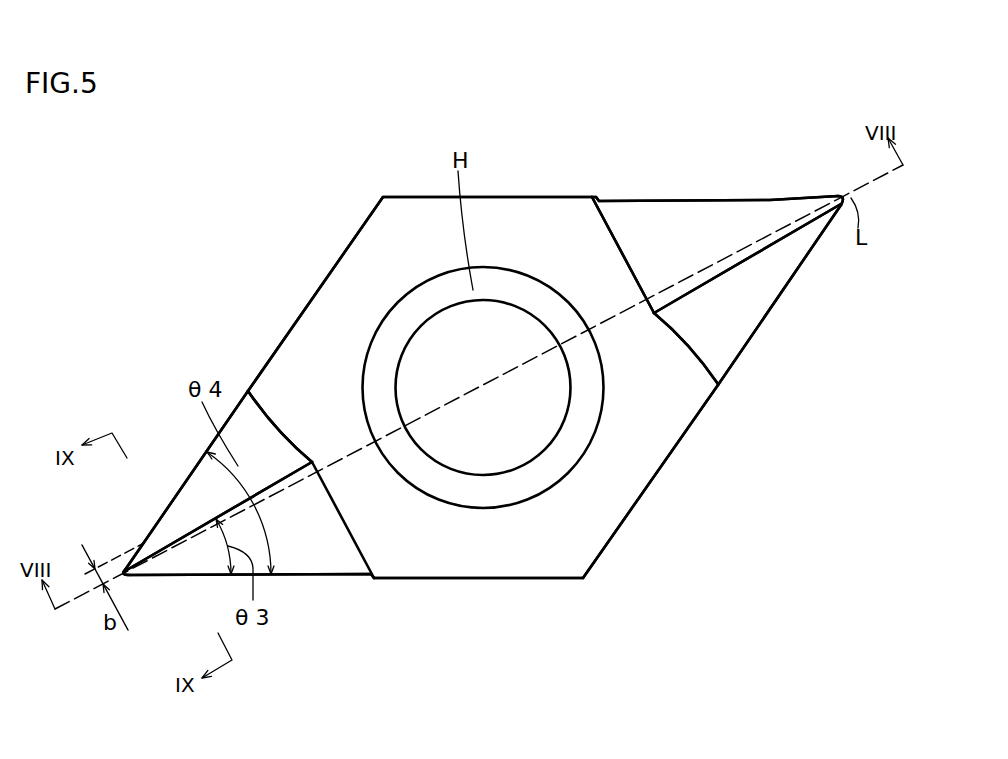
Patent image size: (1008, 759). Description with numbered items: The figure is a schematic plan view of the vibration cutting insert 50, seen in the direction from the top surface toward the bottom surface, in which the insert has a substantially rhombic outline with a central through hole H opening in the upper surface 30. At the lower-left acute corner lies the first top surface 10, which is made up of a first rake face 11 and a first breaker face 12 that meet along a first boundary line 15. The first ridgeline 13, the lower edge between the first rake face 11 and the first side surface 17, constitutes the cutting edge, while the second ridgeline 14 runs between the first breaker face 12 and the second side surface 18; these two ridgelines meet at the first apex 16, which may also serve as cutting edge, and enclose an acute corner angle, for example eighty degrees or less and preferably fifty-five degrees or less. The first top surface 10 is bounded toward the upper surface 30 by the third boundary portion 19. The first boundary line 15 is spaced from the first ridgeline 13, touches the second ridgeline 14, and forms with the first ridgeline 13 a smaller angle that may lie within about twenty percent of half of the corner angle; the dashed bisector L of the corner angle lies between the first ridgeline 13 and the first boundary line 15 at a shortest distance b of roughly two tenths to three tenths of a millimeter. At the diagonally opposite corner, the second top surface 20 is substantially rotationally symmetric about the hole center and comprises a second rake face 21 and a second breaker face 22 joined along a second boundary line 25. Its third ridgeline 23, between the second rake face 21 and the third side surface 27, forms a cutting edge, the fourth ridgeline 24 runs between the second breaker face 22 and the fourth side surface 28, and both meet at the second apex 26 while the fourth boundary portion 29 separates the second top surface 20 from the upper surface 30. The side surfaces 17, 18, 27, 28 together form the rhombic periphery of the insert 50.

The first top surface 10 is at (368, 628).
The first rake face 11 is at (330, 545).
The first breaker face 12 is at (245, 455).
The first ridgeline 13 is at (202, 578).
The second ridgeline 14 is at (177, 495).
The first boundary line 15 is at (293, 470).
The first apex 16 is at (123, 580).
The first side surface 17 is at (477, 582).
The second side surface 18 is at (297, 318).
The third boundary portion 19 is at (290, 423).
The second top surface 20 is at (754, 151).
The second rake face 21 is at (665, 243).
The second breaker face 22 is at (733, 310).
The third ridgeline 23 is at (767, 200).
The fourth ridgeline 24 is at (792, 278).
The second boundary line 25 is at (697, 293).
The second apex 26 is at (843, 195).
The third side surface 27 is at (547, 196).
The fourth side surface 28 is at (653, 478).
The fourth boundary portion 29 is at (624, 246).
The upper surface 30 is at (341, 288).
The vibration cutting insert 50 is at (787, 138).